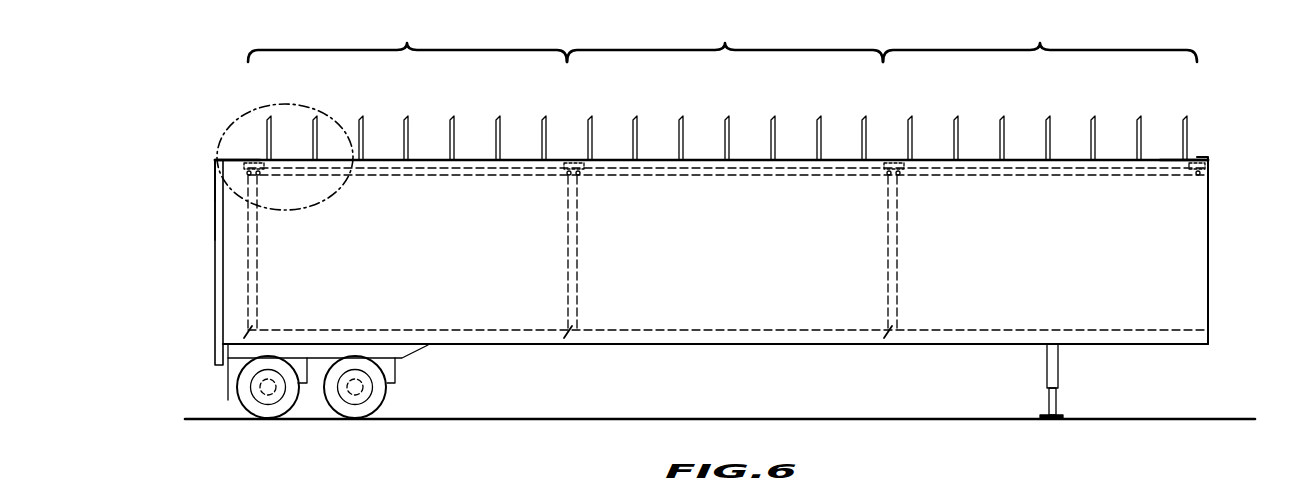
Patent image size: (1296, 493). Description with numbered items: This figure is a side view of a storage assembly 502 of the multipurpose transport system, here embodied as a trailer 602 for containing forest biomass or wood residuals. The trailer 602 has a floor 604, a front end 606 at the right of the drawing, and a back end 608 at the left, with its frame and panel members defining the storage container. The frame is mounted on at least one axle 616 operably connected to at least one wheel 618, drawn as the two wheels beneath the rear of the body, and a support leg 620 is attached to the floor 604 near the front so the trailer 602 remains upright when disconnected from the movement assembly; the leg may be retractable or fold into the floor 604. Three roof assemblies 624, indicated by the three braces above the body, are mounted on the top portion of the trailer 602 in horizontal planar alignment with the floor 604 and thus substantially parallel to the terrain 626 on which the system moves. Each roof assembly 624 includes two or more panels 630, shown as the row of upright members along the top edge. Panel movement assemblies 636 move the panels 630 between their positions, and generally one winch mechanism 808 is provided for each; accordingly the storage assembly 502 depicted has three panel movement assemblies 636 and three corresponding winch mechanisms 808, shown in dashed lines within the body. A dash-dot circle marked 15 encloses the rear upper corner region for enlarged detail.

The detail view region 15 is at (290, 104).
The storage assembly 502 is at (229, 82).
The trailer 602 is at (1200, 252).
The floor 604 is at (688, 330).
The front end 606 is at (1228, 141).
The back end 608 is at (208, 117).
The axle 616 is at (360, 388).
The wheel 618 is at (250, 393).
The support leg 620 is at (1058, 380).
The roof assembly 624 is at (722, 38).
The terrain 626 is at (746, 418).
The panel 630 is at (450, 116).
The panel movement assembly 636 is at (207, 141).
The winch mechanism 808 is at (250, 265).